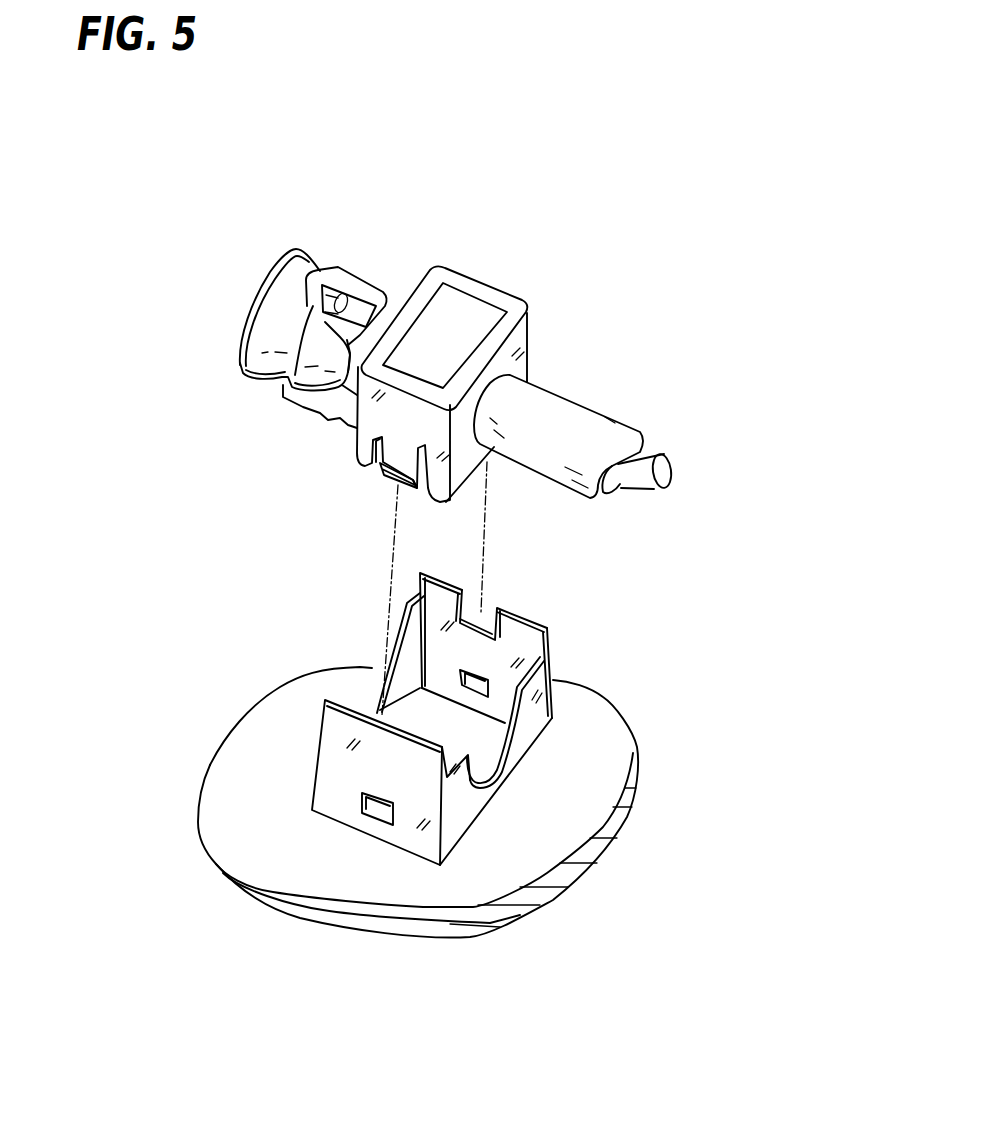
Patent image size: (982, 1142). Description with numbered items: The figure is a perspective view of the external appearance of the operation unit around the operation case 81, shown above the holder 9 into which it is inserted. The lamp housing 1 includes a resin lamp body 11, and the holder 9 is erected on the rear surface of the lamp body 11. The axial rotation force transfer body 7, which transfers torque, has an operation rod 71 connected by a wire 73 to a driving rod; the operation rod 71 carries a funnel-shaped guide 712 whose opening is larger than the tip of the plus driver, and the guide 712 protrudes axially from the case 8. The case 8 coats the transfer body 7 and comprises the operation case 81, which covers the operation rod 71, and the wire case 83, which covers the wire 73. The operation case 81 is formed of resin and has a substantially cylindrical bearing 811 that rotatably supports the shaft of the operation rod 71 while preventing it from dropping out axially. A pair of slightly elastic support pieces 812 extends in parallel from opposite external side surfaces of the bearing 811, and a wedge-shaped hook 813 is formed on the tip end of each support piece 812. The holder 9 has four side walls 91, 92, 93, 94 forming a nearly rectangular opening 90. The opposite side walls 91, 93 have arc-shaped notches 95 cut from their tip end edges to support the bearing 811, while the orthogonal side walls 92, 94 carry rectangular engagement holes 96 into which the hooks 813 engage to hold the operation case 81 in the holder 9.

The lamp housing 1 is at (201, 765).
The lamp body 11 is at (543, 897).
The axial rotation force transfer body 7 is at (283, 246).
The operation rod 71 is at (317, 272).
The guide 712 is at (240, 370).
The wire 73 is at (632, 475).
The case 8 is at (450, 268).
The operation case 81 is at (508, 296).
The bearing 811 is at (510, 360).
The support piece 812 is at (393, 447).
The hook 813 is at (381, 476).
The wire case 83 is at (583, 433).
The holder 9 is at (560, 659).
The opening 90 is at (435, 717).
The side wall 91 is at (540, 712).
The side wall 92 is at (327, 803).
The side wall 93 is at (407, 650).
The side wall 94 is at (530, 650).
The notch 95 is at (368, 709).
The engagement hole 96 is at (482, 677).